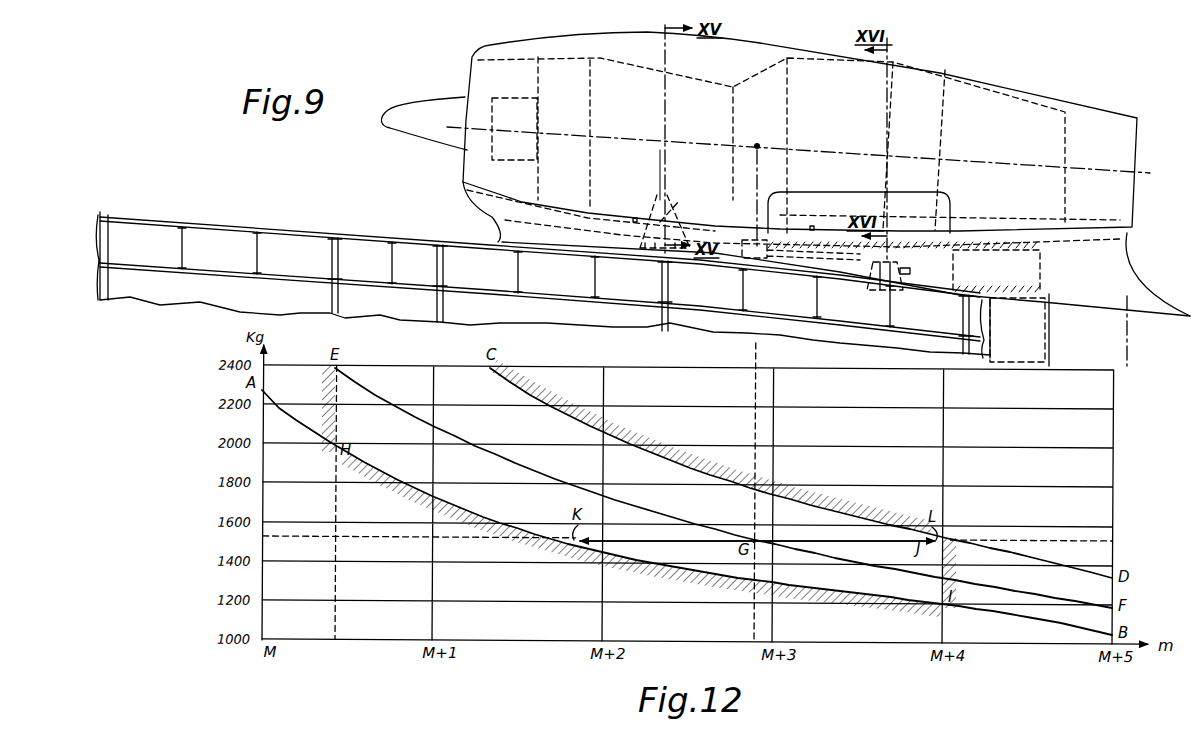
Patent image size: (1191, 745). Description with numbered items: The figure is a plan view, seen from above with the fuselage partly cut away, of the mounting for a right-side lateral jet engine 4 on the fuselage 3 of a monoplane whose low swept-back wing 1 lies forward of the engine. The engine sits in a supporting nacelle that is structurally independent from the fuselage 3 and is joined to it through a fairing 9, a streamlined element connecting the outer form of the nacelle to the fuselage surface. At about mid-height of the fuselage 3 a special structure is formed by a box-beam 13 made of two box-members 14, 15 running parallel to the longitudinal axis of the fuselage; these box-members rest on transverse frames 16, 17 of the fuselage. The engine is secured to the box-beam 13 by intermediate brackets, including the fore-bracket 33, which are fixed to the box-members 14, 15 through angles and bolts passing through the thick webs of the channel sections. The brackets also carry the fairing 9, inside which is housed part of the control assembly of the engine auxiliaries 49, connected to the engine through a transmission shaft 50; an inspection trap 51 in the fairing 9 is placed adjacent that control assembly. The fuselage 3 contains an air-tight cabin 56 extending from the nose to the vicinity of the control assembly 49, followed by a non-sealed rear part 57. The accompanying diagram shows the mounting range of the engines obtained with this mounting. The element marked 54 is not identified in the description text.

The low swept-back wing 1 is at (540, 48).
The fuselage 3 is at (543, 278).
The lateral jet engine 4 is at (417, 113).
The fairing 9 is at (495, 232).
The box-beam 13 is at (287, 240).
The box-member 14 is at (778, 256).
The box-member 15 is at (950, 210).
The transverse frame 16 is at (340, 305).
The transverse frame 17 is at (253, 248).
The fore-bracket 33 is at (655, 252).
The control assembly of the engine auxiliaries 49 is at (1012, 331).
The transmission shaft 50 is at (905, 275).
The inspection trap 51 is at (1040, 275).
The clamp 54 is at (882, 285).
The air-tight cabin 56 is at (861, 338).
The non-sealed rear part 57 is at (1113, 350).